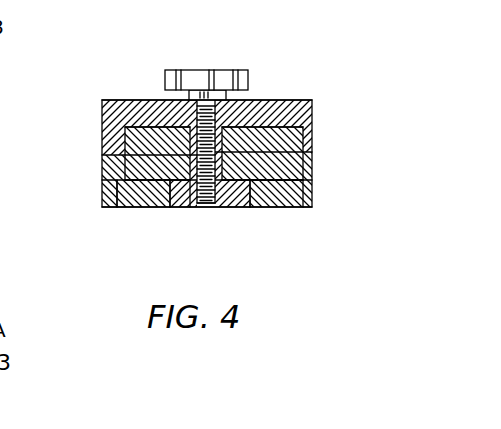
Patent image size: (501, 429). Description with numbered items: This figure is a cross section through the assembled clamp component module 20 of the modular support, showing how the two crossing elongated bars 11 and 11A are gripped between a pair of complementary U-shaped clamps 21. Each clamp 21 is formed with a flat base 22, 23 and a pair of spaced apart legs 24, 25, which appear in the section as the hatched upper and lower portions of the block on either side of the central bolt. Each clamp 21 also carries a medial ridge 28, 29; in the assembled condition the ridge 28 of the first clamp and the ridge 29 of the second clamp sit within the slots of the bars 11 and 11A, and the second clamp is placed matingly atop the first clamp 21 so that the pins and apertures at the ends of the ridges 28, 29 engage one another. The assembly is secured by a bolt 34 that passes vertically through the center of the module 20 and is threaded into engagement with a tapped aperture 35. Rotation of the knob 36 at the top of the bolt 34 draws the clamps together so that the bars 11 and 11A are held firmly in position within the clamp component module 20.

The elongated bar 11 is at (118, 205).
The elongated bar 11A is at (165, 130).
The clamp component module 20 is at (312, 101).
The U-shaped clamp 21 is at (312, 207).
The flat base 22 is at (268, 100).
The flat base 23 is at (264, 208).
The leg 24 is at (112, 128).
The leg 25 is at (105, 175).
The medial ridge 28 is at (280, 100).
The medial ridge 29 is at (172, 207).
The bolt 34 is at (192, 207).
The tapped aperture 35 is at (181, 207).
The knob 36 is at (217, 77).